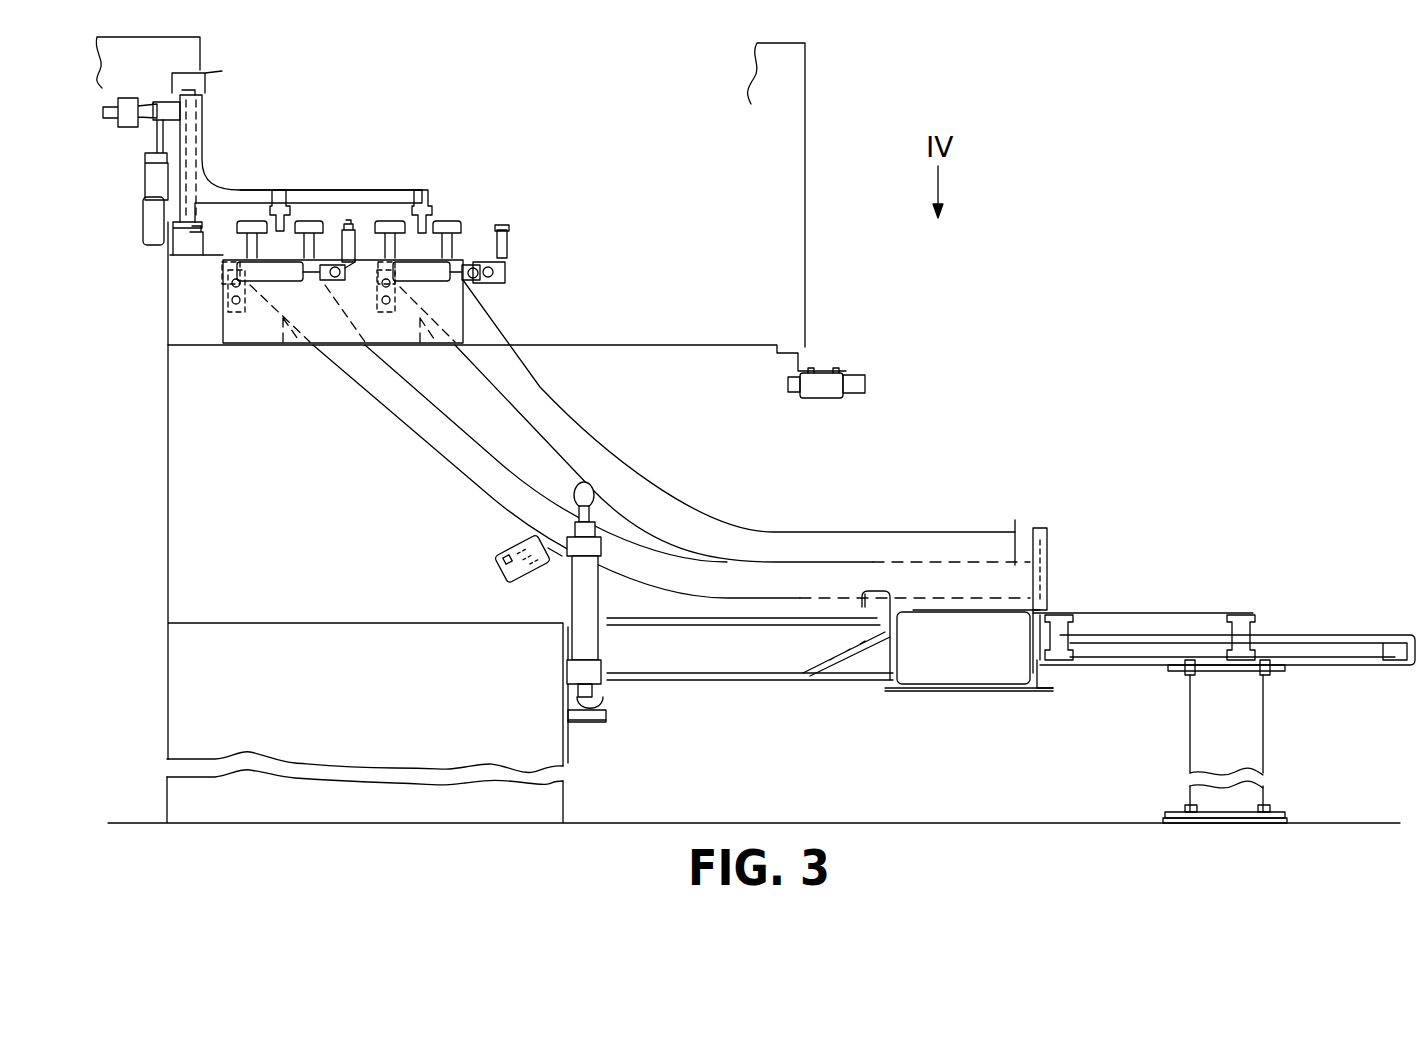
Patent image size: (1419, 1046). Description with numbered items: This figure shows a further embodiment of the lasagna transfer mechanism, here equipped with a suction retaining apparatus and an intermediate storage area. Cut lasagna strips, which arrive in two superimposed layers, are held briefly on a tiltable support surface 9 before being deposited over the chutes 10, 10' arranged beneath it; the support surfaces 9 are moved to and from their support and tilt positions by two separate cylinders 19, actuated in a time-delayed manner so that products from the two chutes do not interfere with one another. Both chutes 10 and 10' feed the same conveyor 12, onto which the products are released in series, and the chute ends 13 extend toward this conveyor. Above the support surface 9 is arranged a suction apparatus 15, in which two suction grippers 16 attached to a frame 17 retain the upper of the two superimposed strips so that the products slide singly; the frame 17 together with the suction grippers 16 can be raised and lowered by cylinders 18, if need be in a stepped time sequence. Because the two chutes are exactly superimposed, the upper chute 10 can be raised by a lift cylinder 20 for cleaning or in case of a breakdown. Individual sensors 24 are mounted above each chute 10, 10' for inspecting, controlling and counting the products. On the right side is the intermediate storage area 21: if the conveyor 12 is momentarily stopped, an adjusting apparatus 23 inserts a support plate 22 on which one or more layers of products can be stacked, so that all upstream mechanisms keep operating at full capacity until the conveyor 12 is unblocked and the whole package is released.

The tiltable support surface 9 is at (499, 233).
The chute 10 is at (735, 421).
The chute 10' is at (556, 471).
The conveyor 12 is at (950, 688).
The chute extension rails 13 is at (844, 562).
The suction apparatus 15 is at (312, 130).
The suction gripper 16 is at (287, 218).
The frame 17 is at (352, 176).
The cylinder 18 is at (166, 188).
The cylinder 19 is at (405, 283).
The lift cylinder 20 is at (600, 635).
The intermediate storage area 21 is at (1222, 568).
The support plate 22 is at (1075, 622).
The adjusting apparatus 23 is at (1303, 643).
The sensor 24 is at (817, 387).